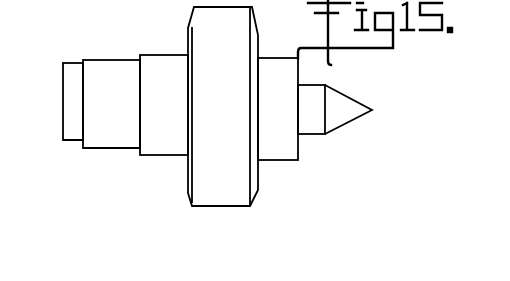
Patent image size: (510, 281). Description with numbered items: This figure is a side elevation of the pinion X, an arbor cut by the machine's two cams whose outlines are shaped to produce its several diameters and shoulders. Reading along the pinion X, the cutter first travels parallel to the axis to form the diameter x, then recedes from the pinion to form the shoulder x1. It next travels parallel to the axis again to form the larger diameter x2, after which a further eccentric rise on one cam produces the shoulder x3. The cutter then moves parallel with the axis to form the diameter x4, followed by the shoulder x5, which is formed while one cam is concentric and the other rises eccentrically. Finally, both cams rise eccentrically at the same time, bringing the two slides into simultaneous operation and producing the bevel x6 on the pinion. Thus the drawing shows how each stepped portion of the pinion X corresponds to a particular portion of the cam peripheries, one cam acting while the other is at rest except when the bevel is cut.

The pinion X is at (210, 109).
The diameter x is at (73, 101).
The shoulder x1 is at (83, 128).
The diameter x2 is at (111, 104).
The shoulder x3 is at (139, 135).
The diameter x4 is at (164, 105).
The shoulder x5 is at (186, 32).
The bevel x6 is at (170, 202).